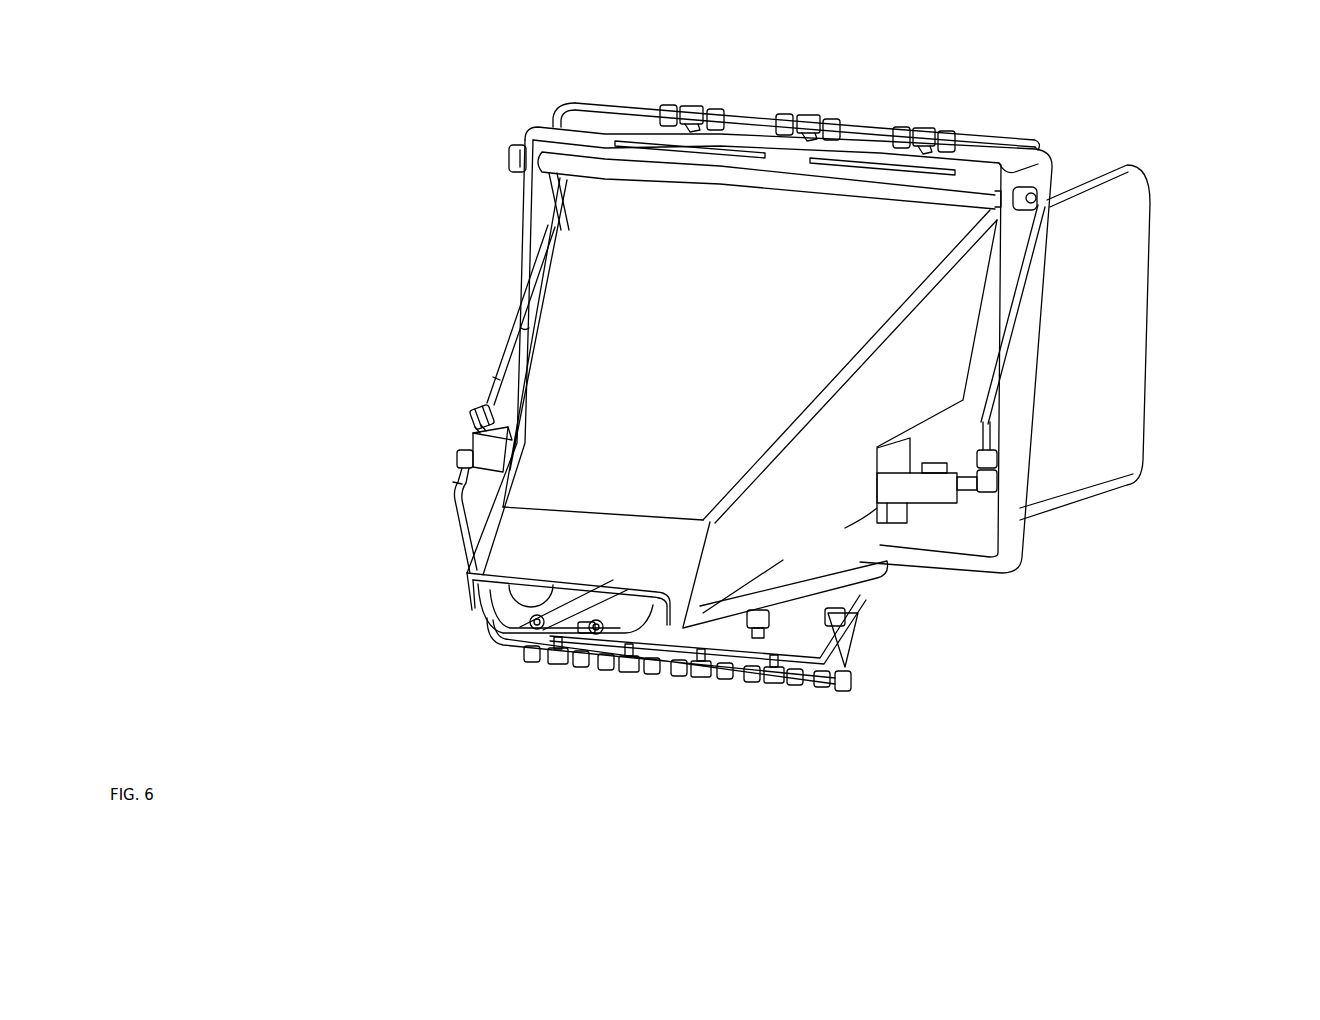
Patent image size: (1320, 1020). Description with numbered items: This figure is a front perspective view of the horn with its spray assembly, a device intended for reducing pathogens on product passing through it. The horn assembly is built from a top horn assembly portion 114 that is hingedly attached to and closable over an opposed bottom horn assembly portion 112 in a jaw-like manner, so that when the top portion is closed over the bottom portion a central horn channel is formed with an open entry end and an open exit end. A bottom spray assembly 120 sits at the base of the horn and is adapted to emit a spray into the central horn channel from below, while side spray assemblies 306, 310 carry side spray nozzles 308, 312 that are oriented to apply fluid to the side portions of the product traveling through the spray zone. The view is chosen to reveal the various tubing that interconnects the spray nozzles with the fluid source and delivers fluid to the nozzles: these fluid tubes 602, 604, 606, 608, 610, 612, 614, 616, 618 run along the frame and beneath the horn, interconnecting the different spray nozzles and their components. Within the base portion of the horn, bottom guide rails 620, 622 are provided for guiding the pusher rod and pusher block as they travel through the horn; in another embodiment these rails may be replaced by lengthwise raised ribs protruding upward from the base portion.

The bottom horn assembly portion 112 is at (1112, 328).
The top horn assembly portion 114 is at (533, 353).
The bottom spray assembly 120 is at (852, 627).
The side spray assembly 306 is at (967, 490).
The side spray nozzle 308 is at (925, 465).
The side spray assembly 310 is at (488, 450).
The side spray nozzle 312 is at (475, 434).
The fluid tube 602 is at (745, 113).
The fluid tube 604 is at (860, 128).
The fluid tube 606 is at (1053, 167).
The fluid tube 608 is at (515, 302).
The fluid tube 610 is at (470, 545).
The fluid tube 612 is at (588, 668).
The fluid tube 614 is at (660, 672).
The fluid tube 616 is at (737, 678).
The fluid tube 618 is at (805, 678).
The bottom guide rail 620 is at (583, 587).
The bottom guide rail 622 is at (655, 596).